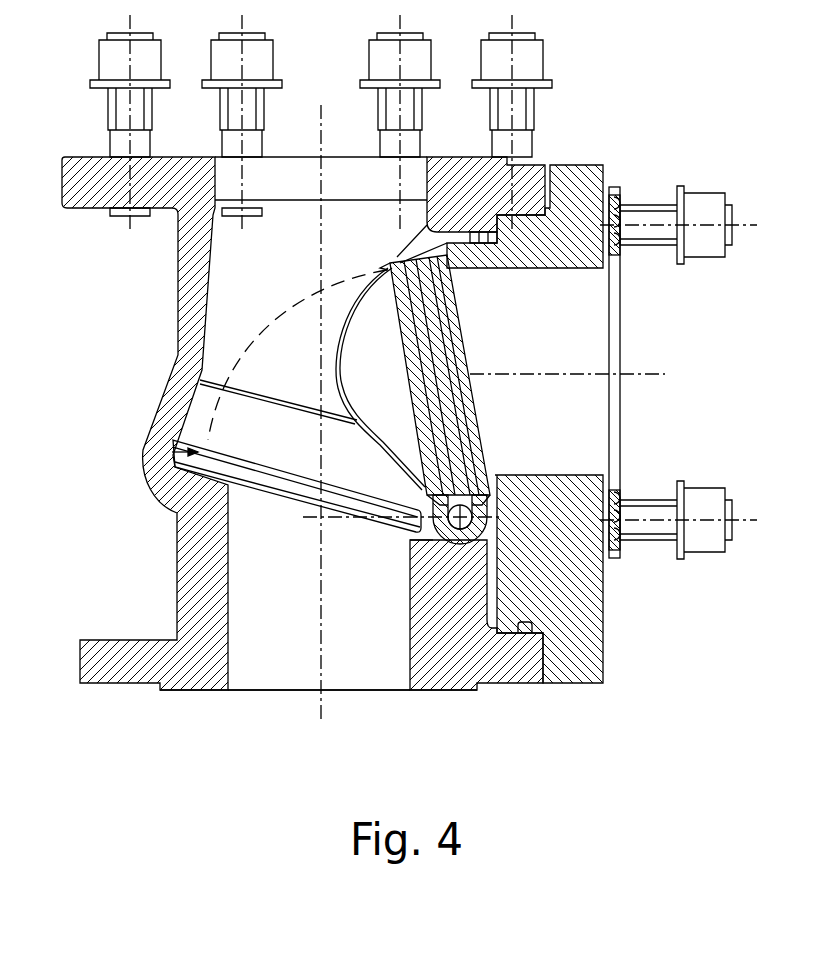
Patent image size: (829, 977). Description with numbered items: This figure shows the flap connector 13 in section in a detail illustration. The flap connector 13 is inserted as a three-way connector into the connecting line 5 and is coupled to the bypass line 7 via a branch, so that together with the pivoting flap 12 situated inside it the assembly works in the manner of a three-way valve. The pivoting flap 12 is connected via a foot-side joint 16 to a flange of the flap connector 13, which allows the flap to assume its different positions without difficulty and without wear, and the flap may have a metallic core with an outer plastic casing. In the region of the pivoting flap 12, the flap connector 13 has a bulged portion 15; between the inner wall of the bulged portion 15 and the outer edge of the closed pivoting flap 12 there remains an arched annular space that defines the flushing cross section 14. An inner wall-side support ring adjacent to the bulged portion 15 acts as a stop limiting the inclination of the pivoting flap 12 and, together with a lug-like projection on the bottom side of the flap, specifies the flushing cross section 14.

The discharge line 5 is at (250, 760).
The bypass 7 is at (698, 334).
The pivoting flap 12 is at (472, 392).
The flap connector 13 is at (177, 287).
The flushing cross section 14 is at (145, 455).
The bulged portion 15 is at (175, 413).
The foot-side joint 16 is at (603, 597).